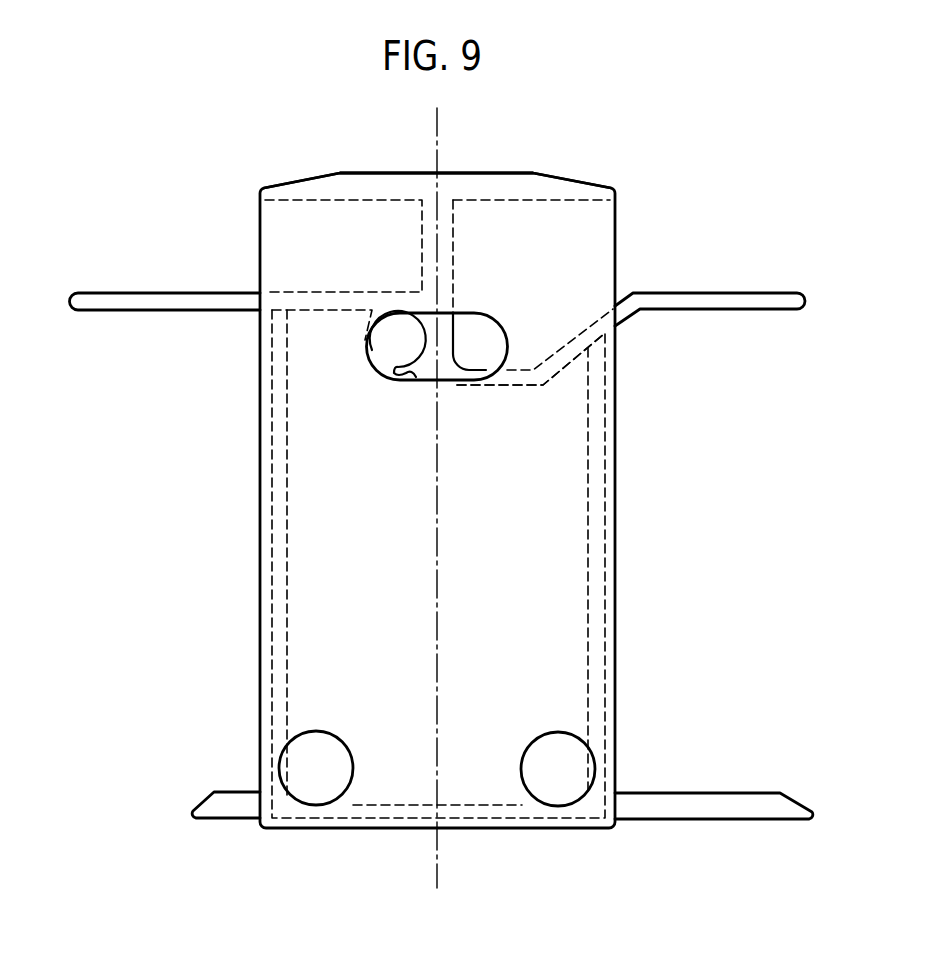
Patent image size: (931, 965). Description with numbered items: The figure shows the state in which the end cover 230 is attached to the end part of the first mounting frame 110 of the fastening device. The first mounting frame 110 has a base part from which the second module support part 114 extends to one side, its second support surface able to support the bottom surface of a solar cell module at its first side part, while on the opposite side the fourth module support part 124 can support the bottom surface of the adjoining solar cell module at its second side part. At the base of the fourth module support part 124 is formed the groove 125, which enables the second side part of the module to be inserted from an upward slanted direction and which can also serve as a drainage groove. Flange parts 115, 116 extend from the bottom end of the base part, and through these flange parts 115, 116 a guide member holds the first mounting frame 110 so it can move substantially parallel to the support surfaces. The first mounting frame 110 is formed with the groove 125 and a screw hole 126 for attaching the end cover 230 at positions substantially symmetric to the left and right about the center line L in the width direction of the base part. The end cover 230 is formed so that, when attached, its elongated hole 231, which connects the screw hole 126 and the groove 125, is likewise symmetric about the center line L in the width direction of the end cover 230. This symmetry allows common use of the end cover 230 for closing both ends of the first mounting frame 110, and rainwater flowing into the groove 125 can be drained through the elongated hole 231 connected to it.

The first mounting frame 110 is at (565, 190).
The second module support part 114 is at (160, 311).
The flange part 115 is at (720, 792).
The flange part 116 is at (227, 790).
The fourth module support part 124 is at (706, 310).
The groove 125 is at (512, 387).
The screw hole 126 is at (410, 375).
The end cover 230 is at (290, 184).
The elongated hole 231 is at (480, 313).
The center line L is at (439, 128).